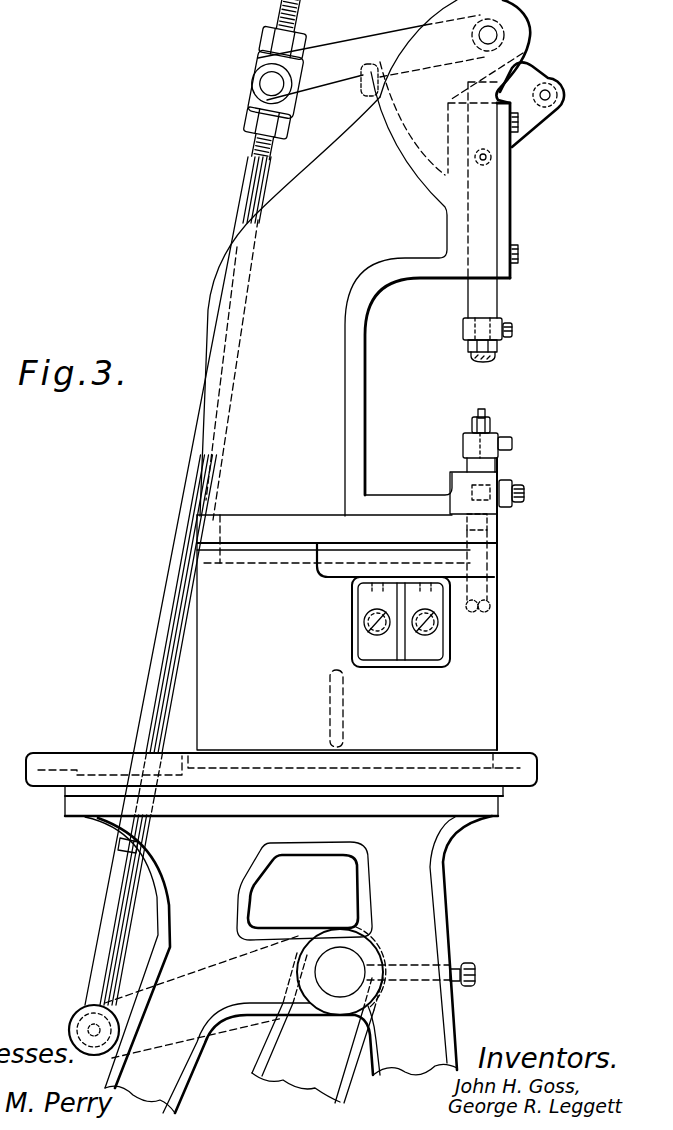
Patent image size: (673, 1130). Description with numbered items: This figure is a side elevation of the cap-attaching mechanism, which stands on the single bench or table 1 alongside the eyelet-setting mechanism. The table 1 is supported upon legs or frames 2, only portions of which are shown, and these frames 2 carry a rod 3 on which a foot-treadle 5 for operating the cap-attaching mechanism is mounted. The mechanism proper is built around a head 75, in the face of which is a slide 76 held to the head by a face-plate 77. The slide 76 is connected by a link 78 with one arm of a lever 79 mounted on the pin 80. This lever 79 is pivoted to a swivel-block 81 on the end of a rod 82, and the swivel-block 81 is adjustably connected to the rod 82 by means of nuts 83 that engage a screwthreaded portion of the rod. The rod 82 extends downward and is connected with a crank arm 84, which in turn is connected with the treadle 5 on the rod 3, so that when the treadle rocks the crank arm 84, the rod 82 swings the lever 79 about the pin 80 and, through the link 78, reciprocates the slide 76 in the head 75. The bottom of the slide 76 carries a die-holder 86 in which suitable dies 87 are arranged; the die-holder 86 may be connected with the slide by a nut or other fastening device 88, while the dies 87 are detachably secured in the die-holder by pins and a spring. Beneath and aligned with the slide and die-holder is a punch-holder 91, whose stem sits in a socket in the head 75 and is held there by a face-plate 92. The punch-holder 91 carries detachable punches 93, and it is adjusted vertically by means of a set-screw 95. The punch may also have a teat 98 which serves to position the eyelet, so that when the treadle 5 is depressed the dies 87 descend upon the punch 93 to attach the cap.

The bench or table 1 is at (517, 755).
The legs or frames 2 is at (288, 964).
The rod 3 is at (353, 967).
The foot-treadle 5 is at (295, 1090).
The head 75 is at (363, 375).
The slide 76 is at (493, 290).
The face-plate 77 is at (512, 215).
The link 78 is at (530, 117).
The lever 79 is at (382, 40).
The pin 80 is at (497, 35).
The swivel-block 81 is at (250, 103).
The rod 82 is at (248, 173).
The nuts 83 is at (257, 40).
The crank arm 84 is at (110, 1007).
The die-holder 86 is at (463, 328).
The dies 87 is at (485, 361).
The nut or other fastening device 88 is at (468, 345).
The punch-holder 91 is at (497, 465).
The face-plate 92 is at (504, 510).
The punches 93 is at (490, 423).
The set-screw 95 is at (493, 608).
The teat 98 is at (479, 411).